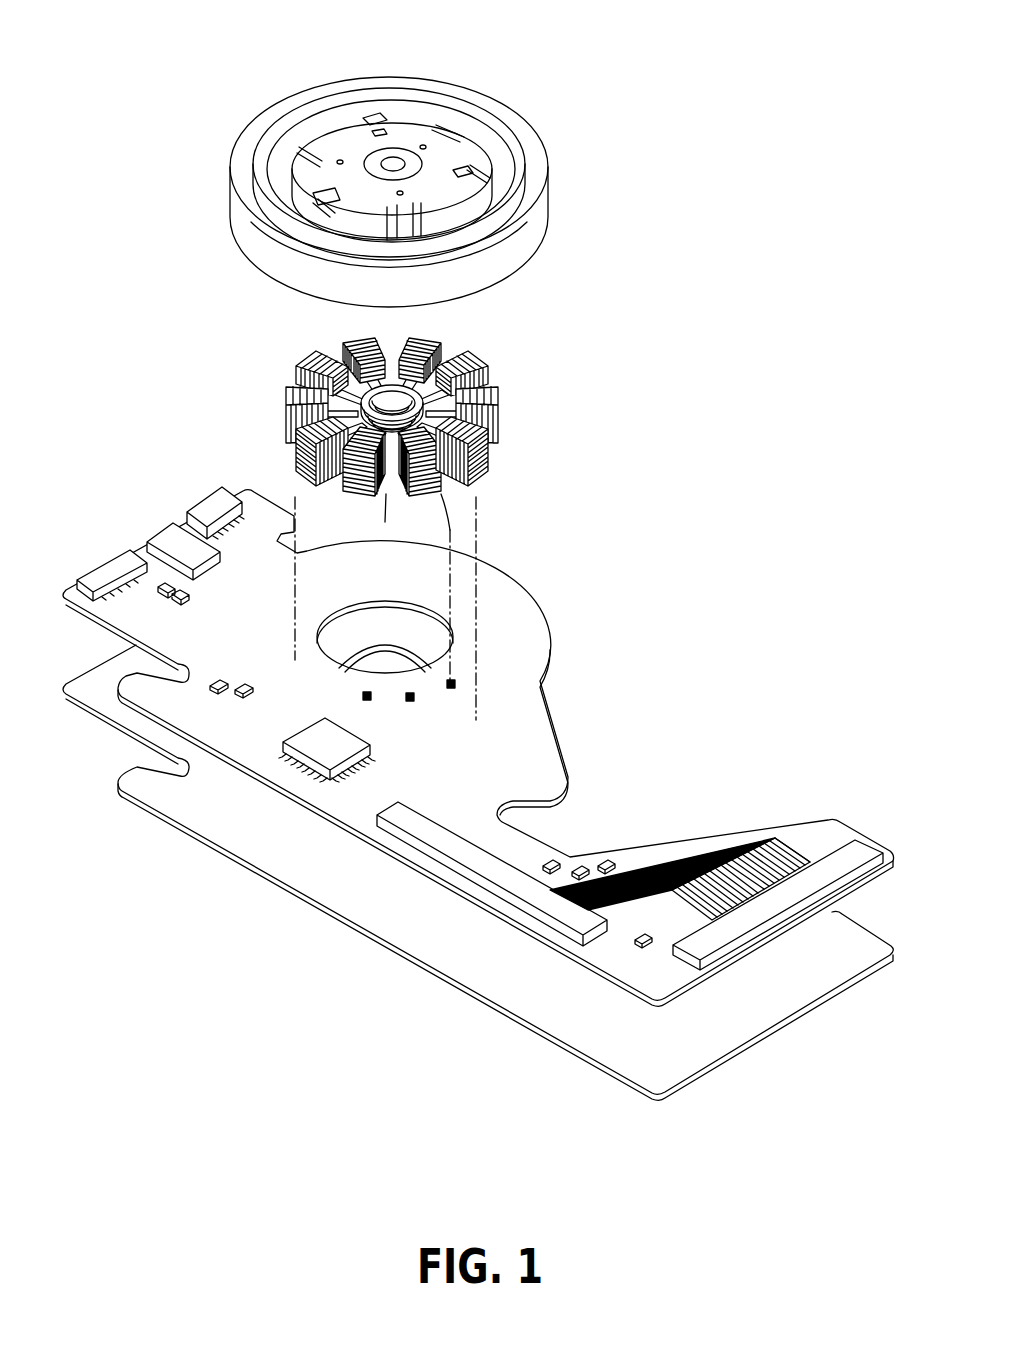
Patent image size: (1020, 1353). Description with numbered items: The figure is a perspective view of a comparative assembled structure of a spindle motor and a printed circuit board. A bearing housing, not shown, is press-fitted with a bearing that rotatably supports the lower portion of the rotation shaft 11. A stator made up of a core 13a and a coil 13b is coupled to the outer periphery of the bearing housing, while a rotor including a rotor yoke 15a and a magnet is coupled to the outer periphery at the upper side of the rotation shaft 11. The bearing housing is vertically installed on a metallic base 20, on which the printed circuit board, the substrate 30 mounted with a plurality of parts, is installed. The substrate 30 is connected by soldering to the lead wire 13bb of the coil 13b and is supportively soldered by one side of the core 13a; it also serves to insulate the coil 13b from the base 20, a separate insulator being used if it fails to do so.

The rotation shaft 11 is at (393, 163).
The rotor yoke 15a is at (517, 243).
The core 13a is at (443, 370).
The coil 13b is at (488, 383).
The lead wire 13bb is at (488, 482).
The substrate 30 is at (527, 748).
The base 20 is at (730, 1033).